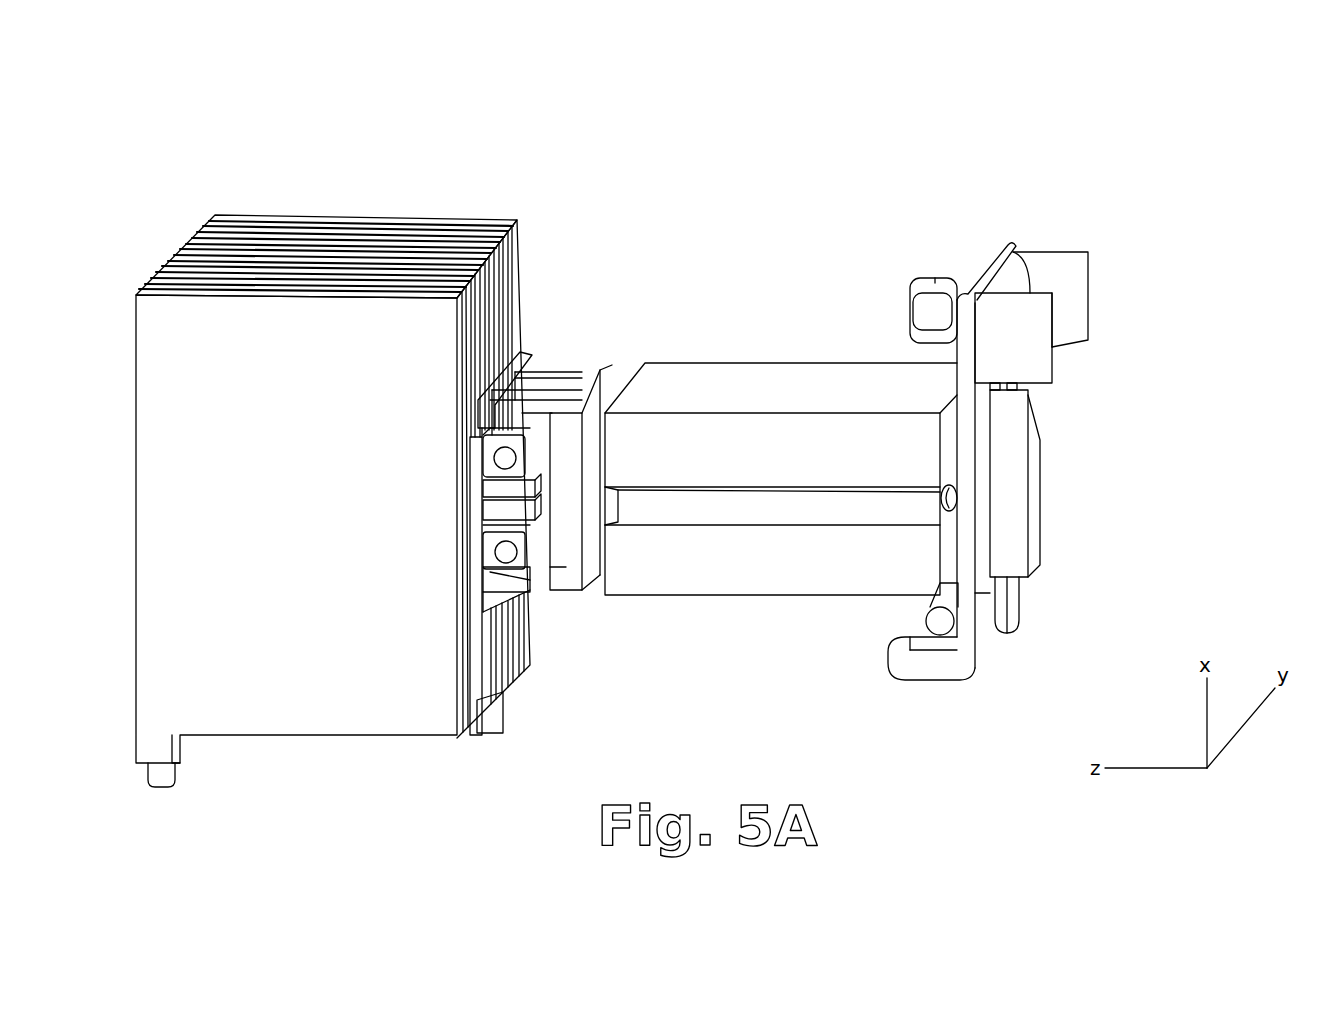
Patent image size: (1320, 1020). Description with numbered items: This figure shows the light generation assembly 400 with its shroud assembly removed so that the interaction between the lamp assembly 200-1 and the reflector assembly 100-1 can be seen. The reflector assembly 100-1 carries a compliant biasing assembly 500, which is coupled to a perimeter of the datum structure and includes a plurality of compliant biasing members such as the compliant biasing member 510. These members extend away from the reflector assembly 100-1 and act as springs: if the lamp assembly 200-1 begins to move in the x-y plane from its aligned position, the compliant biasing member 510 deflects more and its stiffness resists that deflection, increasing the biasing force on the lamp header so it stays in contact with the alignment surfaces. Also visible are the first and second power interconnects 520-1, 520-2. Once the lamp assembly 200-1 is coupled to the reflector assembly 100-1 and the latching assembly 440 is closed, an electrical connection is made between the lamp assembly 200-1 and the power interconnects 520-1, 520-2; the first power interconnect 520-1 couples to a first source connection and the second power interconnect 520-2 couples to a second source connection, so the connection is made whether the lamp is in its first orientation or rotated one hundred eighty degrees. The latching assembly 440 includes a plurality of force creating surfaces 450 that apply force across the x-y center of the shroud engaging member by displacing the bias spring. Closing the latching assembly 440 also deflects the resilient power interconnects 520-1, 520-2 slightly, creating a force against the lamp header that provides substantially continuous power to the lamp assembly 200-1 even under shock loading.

The reflector assembly 100-1 is at (392, 185).
The lamp assembly 200-1 is at (720, 283).
The light generation assembly 400 is at (846, 414).
The latching assembly 440 is at (930, 657).
The force creating surfaces 450 is at (953, 505).
The compliant biasing assembly 500 is at (531, 525).
The compliant biasing member 510 is at (583, 362).
The first power interconnect 520-1 is at (530, 355).
The second power interconnect 520-2 is at (527, 615).